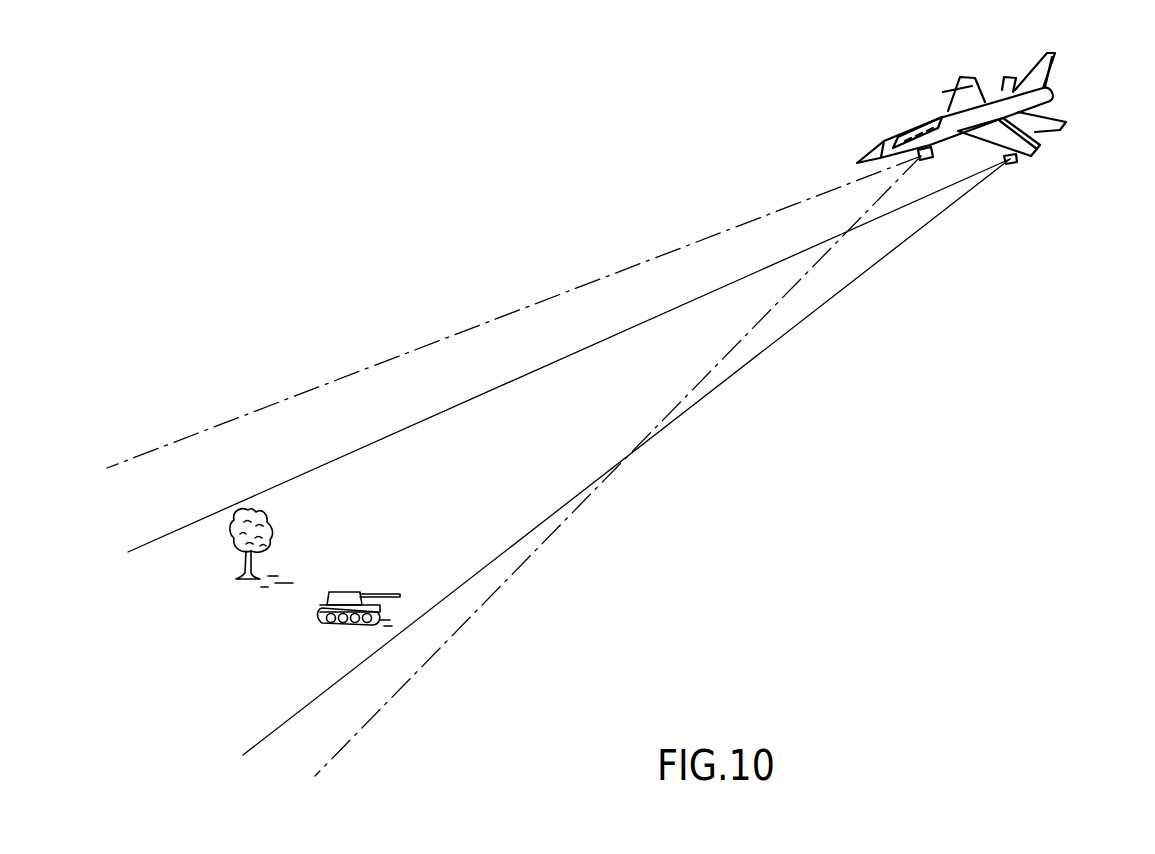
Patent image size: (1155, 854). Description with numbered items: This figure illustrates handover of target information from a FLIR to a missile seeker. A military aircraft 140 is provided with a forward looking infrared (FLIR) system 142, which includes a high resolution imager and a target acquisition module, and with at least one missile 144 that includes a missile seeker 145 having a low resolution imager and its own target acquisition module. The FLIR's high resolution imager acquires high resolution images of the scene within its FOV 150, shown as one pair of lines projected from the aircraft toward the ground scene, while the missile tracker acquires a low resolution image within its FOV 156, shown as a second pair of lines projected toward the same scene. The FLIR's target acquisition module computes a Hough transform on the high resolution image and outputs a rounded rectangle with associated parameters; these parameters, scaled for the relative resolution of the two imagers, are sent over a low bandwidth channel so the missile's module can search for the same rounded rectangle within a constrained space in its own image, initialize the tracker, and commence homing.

The military aircraft 140 is at (983, 100).
The forward looking infrared (FLIR) system 142 is at (927, 150).
The missile 144 is at (1037, 143).
The missile seeker 145 is at (1012, 163).
The FOV 150 is at (537, 300).
The FOV 156 is at (443, 408).